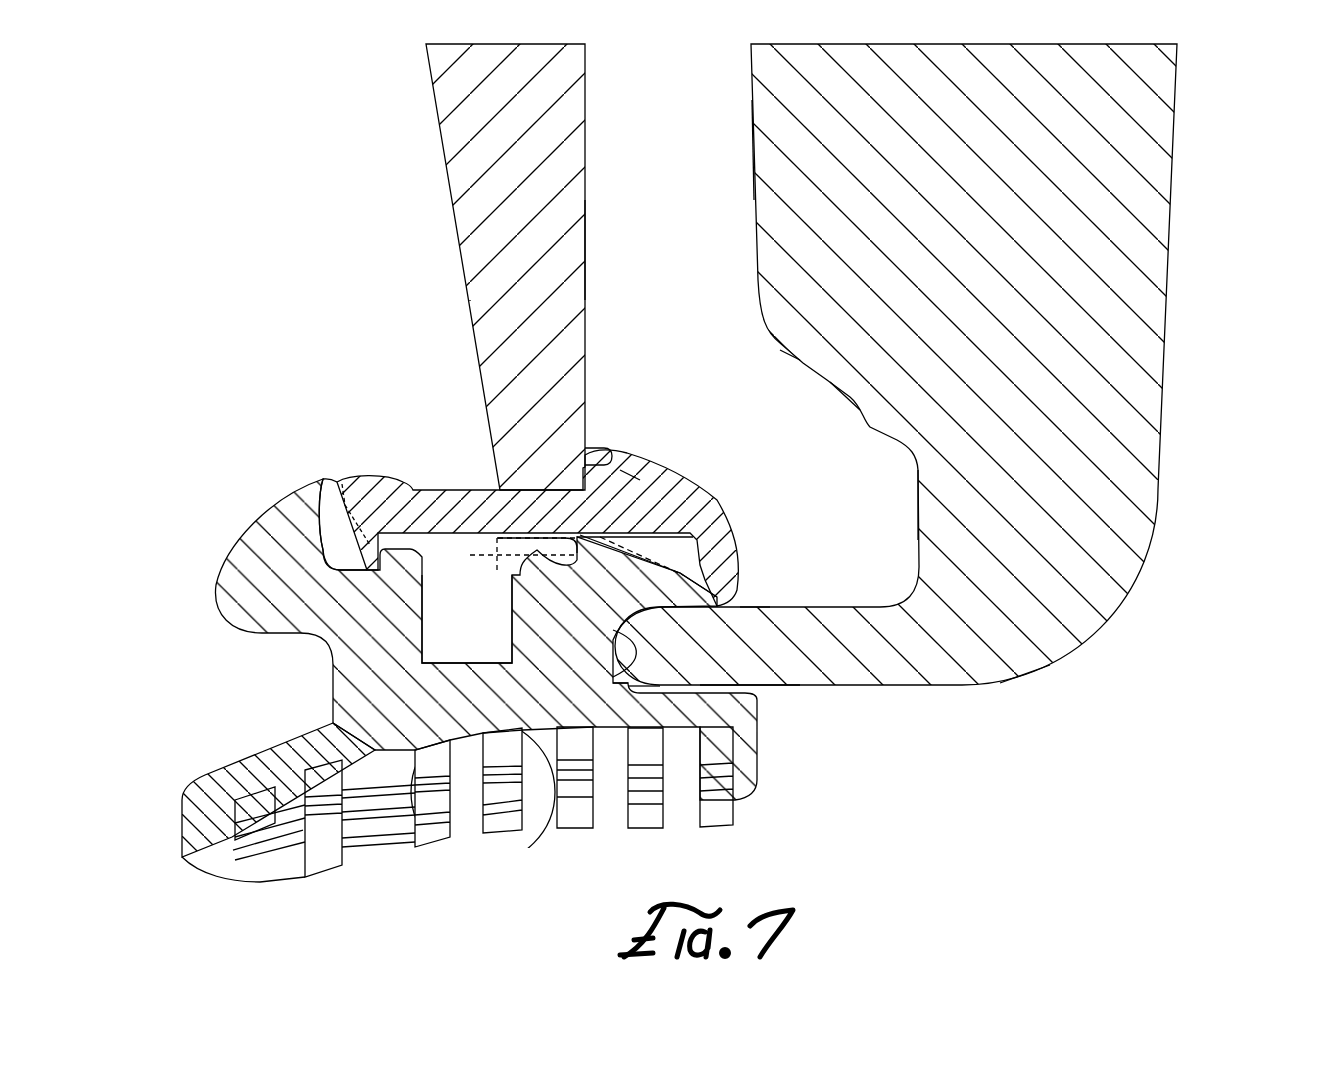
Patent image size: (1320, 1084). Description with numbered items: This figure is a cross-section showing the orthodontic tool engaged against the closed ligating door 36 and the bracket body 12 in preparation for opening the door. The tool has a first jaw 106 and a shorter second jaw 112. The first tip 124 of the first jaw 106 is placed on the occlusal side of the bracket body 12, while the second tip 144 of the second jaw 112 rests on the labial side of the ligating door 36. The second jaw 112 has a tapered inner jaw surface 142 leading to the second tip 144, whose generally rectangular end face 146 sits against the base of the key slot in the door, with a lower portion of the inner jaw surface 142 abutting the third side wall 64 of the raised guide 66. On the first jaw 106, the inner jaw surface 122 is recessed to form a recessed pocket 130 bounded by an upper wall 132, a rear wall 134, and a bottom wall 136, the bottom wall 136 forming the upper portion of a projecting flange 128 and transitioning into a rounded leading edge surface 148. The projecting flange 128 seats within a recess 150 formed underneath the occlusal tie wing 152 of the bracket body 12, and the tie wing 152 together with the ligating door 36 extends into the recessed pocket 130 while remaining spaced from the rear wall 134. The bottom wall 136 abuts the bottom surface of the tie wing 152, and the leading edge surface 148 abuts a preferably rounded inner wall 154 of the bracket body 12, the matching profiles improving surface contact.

The bracket body 12 is at (240, 583).
The ligating door 36 is at (730, 490).
The third side wall 64 is at (612, 465).
The raised guide 66 is at (627, 482).
The first jaw 106 is at (1127, 140).
The second jaw 112 is at (492, 147).
The inner jaw surface 122 is at (753, 150).
The first tip 124 is at (1066, 710).
The projecting flange 128 is at (747, 665).
The recessed pocket 130 is at (754, 408).
The upper wall 132 is at (850, 397).
The rear wall 134 is at (917, 510).
The bottom wall 136 is at (755, 607).
The inner jaw surface 142 is at (587, 240).
The second tip 144 is at (452, 388).
The end face 146 is at (558, 513).
The leading edge surface 148 is at (632, 685).
The recess 150 is at (641, 697).
The occlusal tie wing 152 is at (728, 600).
The inner wall 154 is at (628, 642).